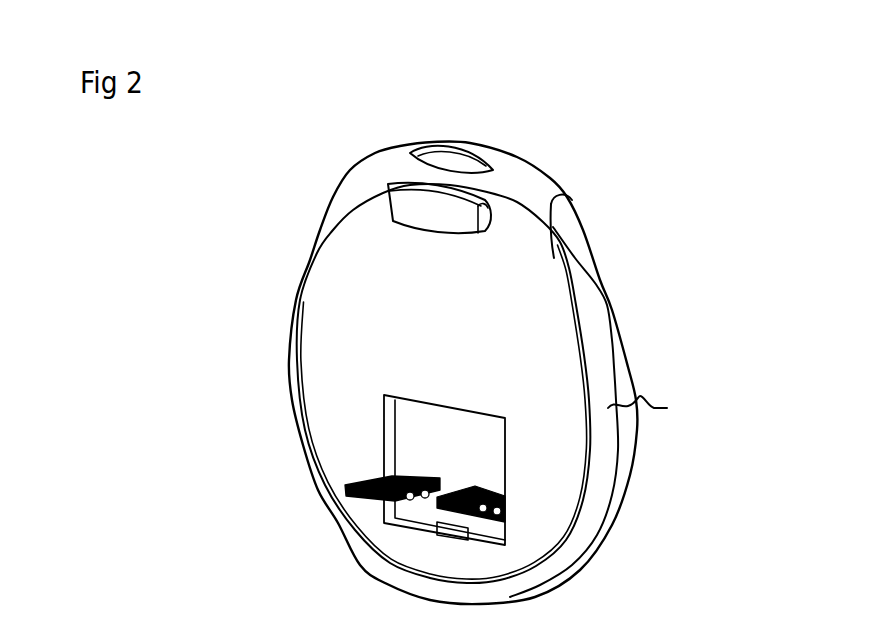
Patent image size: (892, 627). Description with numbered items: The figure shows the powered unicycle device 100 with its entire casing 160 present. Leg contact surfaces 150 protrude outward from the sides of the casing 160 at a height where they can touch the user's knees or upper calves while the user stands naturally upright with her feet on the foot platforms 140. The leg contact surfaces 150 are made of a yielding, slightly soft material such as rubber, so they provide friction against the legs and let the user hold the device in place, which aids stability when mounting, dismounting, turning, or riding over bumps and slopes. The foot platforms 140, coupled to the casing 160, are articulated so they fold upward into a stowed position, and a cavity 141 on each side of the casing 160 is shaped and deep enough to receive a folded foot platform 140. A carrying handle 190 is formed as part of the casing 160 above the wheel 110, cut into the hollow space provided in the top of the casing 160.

The powered unicycle device 100 is at (643, 203).
The wheel 110 is at (655, 408).
The foot platforms 140 is at (363, 498).
The cavity 141 is at (463, 457).
The leg contact surfaces 150 is at (400, 207).
The casing 160 is at (450, 318).
The carrying handle 190 is at (447, 162).